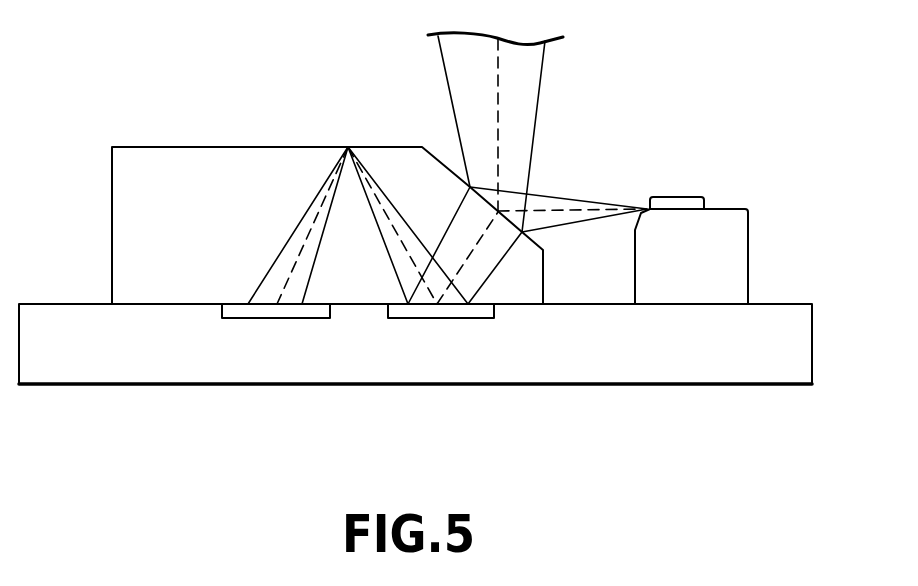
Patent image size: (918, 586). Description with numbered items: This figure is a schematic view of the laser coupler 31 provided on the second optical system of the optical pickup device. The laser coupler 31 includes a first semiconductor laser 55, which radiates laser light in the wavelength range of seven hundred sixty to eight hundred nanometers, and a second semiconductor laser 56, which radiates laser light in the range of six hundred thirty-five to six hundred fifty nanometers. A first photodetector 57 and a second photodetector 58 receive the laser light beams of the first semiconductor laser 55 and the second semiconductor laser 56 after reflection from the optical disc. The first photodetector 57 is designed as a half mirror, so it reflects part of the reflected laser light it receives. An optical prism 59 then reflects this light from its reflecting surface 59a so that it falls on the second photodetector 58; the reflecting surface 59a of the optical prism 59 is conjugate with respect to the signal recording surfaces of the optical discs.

The laser coupler 31 is at (111, 412).
The optical prism 59 is at (264, 185).
The reflecting surface 59a is at (380, 147).
The first semiconductor laser 55 is at (687, 198).
The second semiconductor laser 56 is at (691, 206).
The first photodetector 57 is at (468, 319).
The second photodetector 58 is at (317, 319).